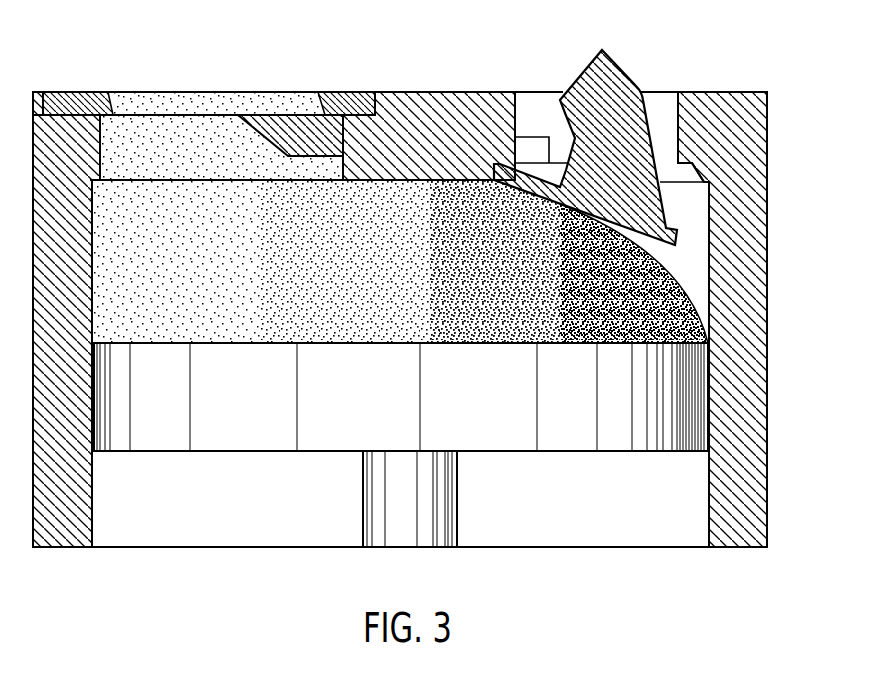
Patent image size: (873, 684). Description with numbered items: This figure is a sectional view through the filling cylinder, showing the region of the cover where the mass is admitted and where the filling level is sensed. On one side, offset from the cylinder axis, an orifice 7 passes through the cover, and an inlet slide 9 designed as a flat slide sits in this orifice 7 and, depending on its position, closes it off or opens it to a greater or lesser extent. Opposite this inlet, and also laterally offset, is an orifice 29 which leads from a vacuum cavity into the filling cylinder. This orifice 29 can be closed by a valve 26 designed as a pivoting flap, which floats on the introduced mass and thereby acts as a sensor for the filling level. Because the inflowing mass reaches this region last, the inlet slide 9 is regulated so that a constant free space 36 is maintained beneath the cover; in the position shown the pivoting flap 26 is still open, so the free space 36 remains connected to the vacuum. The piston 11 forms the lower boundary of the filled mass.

The orifice 7 is at (172, 103).
The inlet slide 9 is at (295, 133).
The piston 11 is at (573, 416).
The pivoting flap valve 26 is at (612, 97).
The orifice 29 is at (662, 117).
The free space 36 is at (685, 263).